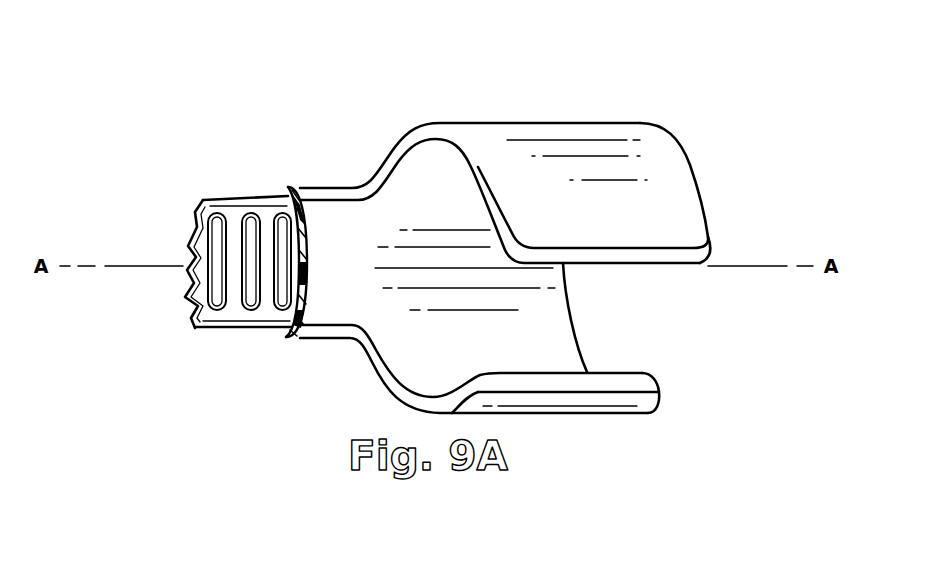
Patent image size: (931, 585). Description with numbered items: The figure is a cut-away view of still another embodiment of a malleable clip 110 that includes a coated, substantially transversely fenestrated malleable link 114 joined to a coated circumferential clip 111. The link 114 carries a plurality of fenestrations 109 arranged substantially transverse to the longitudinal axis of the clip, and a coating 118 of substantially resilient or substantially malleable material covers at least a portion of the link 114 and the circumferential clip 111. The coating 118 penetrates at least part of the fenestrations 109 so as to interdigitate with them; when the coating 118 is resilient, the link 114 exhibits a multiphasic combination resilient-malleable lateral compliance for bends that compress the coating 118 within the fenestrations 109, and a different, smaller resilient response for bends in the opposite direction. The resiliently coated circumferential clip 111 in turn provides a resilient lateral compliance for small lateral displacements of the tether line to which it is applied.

The fenestrations 109 is at (275, 247).
The malleable clip 110 is at (176, 155).
The circumferential clip 111 is at (574, 105).
The malleable link 114 is at (214, 347).
The coating 118 is at (284, 195).